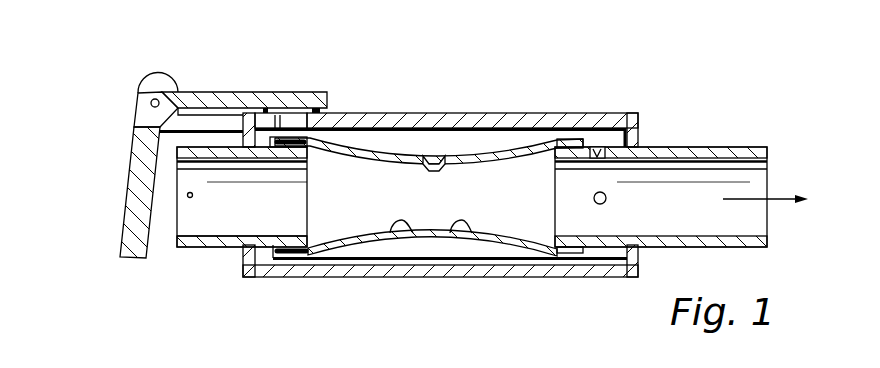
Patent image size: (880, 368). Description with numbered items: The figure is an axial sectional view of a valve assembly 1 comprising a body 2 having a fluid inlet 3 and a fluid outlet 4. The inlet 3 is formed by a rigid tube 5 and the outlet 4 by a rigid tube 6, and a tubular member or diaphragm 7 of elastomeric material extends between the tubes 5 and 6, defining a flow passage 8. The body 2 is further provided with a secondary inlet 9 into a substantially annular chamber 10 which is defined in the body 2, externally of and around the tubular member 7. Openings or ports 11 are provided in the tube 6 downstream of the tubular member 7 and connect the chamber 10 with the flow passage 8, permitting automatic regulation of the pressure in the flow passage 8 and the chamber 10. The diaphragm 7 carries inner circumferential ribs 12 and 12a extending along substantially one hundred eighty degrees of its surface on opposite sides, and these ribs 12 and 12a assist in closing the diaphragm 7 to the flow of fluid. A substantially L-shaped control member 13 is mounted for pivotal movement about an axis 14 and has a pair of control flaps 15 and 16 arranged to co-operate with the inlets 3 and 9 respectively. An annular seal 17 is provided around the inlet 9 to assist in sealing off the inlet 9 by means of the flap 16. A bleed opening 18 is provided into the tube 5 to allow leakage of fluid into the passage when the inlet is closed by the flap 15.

The valve assembly 1 is at (403, 98).
The body 2 is at (276, 278).
The fluid inlet 3 is at (190, 220).
The fluid outlet 4 is at (747, 218).
The rigid tube 5 is at (205, 247).
The rigid tube 6 is at (717, 147).
The tubular member or diaphragm 7 is at (466, 152).
The flow passage 8 is at (512, 216).
The secondary inlet 9 is at (290, 120).
The annular chamber 10 is at (518, 128).
The openings or ports 11 is at (603, 150).
The inner circumferential rib 12 is at (430, 172).
The inner circumferential rib 12a is at (392, 226).
The L-shaped control member 13 is at (153, 78).
The axis 14 is at (151, 104).
The control flap 15 is at (128, 170).
The control flap 16 is at (207, 95).
The annular seal 17 is at (290, 122).
The bleed opening 18 is at (187, 195).